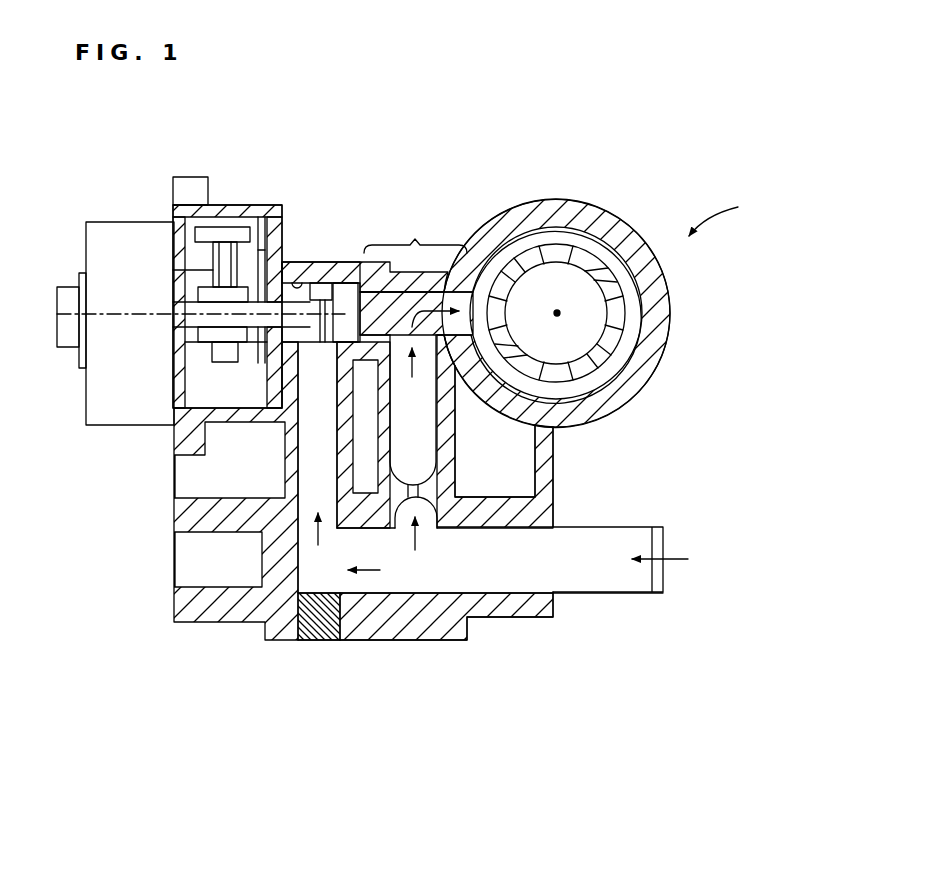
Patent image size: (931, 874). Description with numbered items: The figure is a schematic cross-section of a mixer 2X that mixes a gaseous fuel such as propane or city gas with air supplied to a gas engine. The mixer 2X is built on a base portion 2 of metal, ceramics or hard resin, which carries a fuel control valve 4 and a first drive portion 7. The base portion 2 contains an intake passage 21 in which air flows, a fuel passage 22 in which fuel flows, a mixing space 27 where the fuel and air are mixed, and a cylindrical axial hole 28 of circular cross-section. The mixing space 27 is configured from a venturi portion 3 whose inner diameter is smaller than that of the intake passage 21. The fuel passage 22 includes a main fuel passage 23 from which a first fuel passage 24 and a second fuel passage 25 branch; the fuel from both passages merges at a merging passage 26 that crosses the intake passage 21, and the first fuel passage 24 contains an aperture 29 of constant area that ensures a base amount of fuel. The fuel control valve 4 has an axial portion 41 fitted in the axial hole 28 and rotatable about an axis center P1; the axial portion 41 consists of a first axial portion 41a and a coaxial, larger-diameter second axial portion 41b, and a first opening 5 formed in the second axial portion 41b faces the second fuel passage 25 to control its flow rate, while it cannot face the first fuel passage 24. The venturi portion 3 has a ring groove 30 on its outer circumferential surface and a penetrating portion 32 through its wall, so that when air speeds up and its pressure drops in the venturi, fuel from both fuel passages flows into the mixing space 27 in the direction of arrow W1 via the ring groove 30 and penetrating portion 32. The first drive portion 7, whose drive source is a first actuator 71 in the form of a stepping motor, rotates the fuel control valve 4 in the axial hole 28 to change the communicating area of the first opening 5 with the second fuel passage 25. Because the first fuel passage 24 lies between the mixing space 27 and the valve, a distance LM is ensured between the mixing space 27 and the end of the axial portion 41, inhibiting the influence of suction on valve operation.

The first actuator 71 is at (99, 222).
The first drive portion 7 is at (190, 250).
The fuel control valve 4 is at (190, 316).
The axis center P1 is at (228, 330).
The first axial portion 41a is at (259, 290).
The second axial portion 41b is at (339, 285).
The axial portion 41 is at (347, 290).
The axial hole 28 is at (283, 285).
The first opening 5 is at (317, 282).
The distance LM is at (415, 229).
The ring groove 30 is at (498, 257).
The intake passage 21 is at (580, 275).
The mixer 2X is at (730, 217).
The arrow W1 is at (473, 292).
The mixing space 27 is at (592, 294).
The merging passage 26 is at (488, 327).
The venturi portion 3 is at (615, 322).
The penetrating portion 32 is at (550, 388).
The first fuel passage 24 is at (425, 447).
The aperture 29 is at (420, 494).
The base portion 2 is at (555, 488).
The second fuel passage 25 is at (300, 440).
The fuel passage 22 is at (590, 577).
The main fuel passage 23 is at (503, 580).